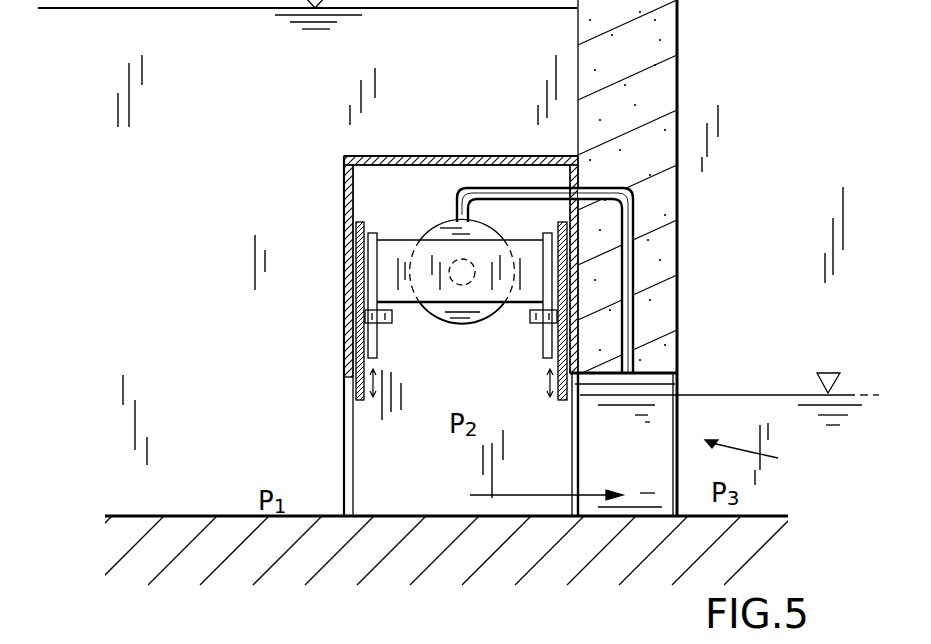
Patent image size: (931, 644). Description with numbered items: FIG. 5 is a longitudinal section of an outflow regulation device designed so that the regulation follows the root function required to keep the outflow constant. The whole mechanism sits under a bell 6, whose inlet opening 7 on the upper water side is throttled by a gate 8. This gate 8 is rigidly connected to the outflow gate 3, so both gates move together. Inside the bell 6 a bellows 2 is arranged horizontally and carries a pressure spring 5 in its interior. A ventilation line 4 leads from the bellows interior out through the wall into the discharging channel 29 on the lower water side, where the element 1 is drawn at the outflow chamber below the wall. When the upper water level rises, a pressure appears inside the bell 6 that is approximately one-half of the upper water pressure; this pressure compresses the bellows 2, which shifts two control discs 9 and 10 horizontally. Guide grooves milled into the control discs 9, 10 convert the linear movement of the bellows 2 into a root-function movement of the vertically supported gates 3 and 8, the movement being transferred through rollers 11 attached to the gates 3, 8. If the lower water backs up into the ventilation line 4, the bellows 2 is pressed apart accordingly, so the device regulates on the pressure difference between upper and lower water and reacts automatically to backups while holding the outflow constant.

The outlet chamber 1 is at (580, 435).
The bellows 2 is at (441, 221).
The outflow gate 3 is at (690, 382).
The ventilation line 4 is at (634, 228).
The pressure spring 5 is at (462, 272).
The bell 6 is at (470, 158).
The inlet opening 7 is at (347, 437).
The gate 8 is at (355, 388).
The control disc 9 is at (550, 352).
The control disc 10 is at (372, 232).
The rollers 11 is at (531, 318).
The discharging channel 29 is at (757, 456).